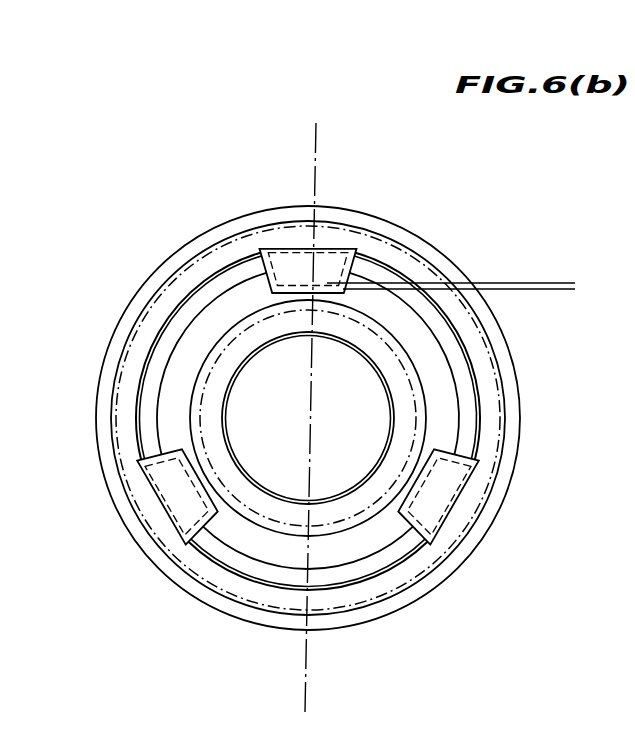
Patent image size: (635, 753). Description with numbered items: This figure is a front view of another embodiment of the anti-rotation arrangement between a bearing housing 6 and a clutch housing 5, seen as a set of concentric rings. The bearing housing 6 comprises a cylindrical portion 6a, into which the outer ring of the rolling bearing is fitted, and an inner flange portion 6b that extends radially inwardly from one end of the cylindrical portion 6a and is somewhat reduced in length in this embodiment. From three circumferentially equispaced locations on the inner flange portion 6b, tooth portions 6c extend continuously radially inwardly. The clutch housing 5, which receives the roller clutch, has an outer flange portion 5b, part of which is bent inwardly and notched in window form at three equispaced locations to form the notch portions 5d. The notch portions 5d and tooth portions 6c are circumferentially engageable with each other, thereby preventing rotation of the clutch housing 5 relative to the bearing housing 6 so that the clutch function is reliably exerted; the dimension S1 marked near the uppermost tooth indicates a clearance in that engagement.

The clutch housing 5 is at (120, 337).
The outer flange portion 5b is at (288, 592).
The notch portions 5d is at (345, 278).
The bearing housing 6 is at (126, 290).
The cylindrical portion 6a is at (187, 252).
The inner flange portion 6b is at (229, 256).
The tooth portions 6c is at (296, 247).
The clearance gap S1 is at (567, 343).